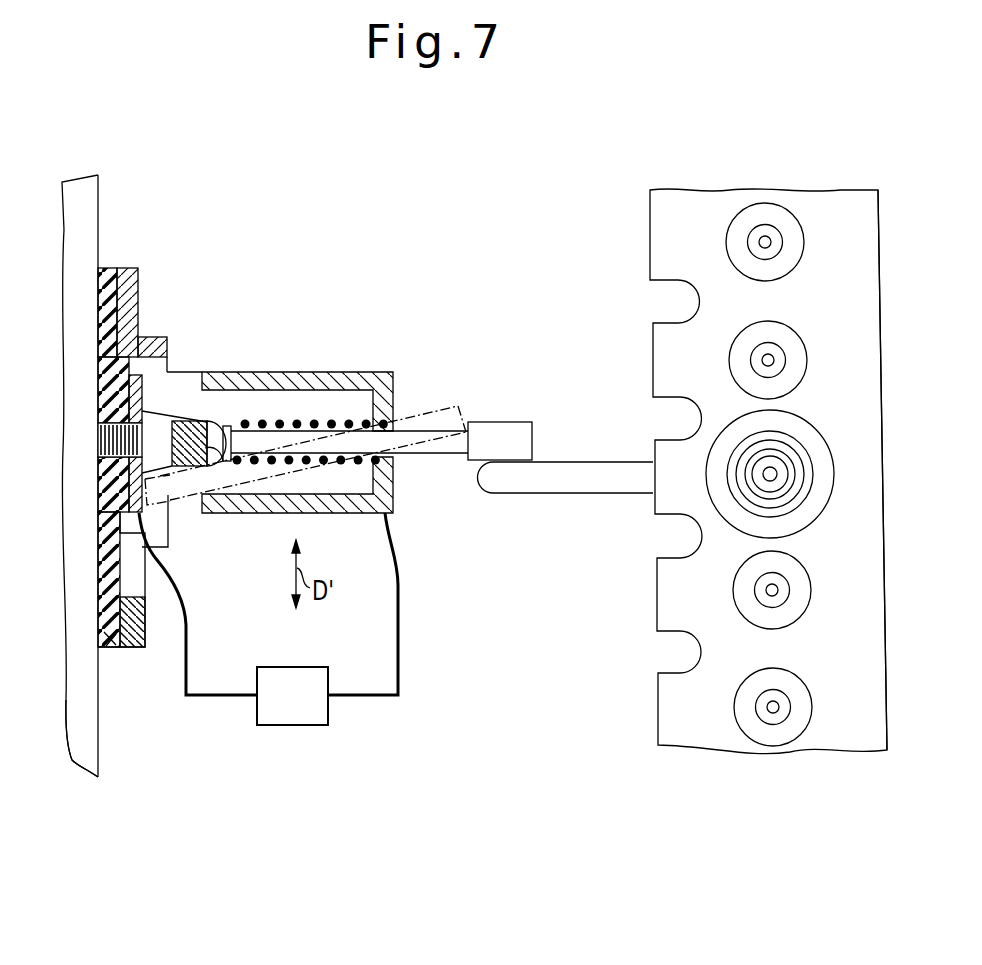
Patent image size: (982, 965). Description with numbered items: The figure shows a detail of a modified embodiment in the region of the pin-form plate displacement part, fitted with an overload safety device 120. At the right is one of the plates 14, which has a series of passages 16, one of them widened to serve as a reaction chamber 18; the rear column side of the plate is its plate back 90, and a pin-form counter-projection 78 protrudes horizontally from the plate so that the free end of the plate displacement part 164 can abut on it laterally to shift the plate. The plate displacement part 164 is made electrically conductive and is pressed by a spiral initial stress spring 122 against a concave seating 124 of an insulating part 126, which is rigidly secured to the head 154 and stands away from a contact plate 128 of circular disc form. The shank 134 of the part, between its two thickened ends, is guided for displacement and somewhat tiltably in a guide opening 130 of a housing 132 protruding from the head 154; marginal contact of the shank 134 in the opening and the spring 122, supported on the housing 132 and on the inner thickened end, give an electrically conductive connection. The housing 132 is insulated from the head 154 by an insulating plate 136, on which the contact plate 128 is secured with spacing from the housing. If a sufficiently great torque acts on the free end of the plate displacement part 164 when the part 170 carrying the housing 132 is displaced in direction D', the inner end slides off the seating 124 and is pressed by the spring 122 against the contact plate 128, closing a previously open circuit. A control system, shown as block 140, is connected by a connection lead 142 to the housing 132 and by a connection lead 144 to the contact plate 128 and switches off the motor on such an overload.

The plate 14 is at (700, 204).
The passages 16 is at (791, 614).
The reaction chamber 18 is at (816, 445).
The counter-projection 78 is at (574, 482).
The plate backs 90 is at (886, 522).
The overload safety device 120 is at (316, 360).
The spiral initial stress spring 122 is at (280, 429).
The concave seating 124 is at (200, 466).
The insulating part 126 is at (195, 423).
The contact plate 128 is at (148, 342).
The guide opening 130 is at (396, 447).
The housing 132 is at (318, 514).
The shank 134 is at (328, 378).
The insulating plate 136 is at (116, 648).
The control system 140 is at (308, 708).
The connection lead 142 is at (400, 586).
The connection lead 144 is at (190, 617).
The head 154 is at (98, 765).
The plate displacement part 164 is at (432, 440).
The part carrying the housing 170 is at (100, 212).